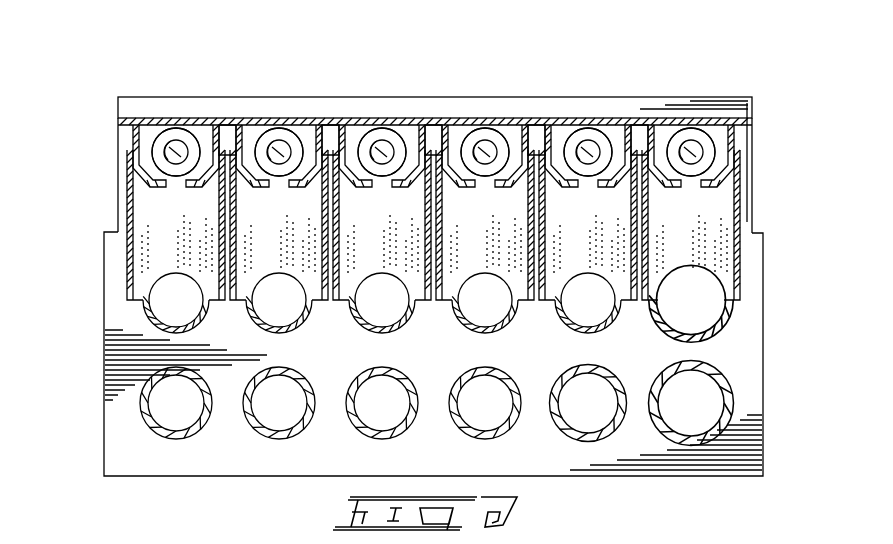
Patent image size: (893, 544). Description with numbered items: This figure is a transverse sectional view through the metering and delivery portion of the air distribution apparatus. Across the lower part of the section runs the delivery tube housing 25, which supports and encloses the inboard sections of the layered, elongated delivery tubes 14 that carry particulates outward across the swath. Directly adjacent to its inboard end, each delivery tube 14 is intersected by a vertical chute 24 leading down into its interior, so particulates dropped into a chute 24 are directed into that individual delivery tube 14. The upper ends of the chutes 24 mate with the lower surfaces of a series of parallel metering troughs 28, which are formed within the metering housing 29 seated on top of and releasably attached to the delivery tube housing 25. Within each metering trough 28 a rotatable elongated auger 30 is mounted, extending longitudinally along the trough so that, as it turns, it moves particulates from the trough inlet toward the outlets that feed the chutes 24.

The delivery tube 14 is at (257, 430).
The vertical chute 24 is at (267, 230).
The delivery tube housing 25 is at (103, 412).
The metering trough 28 is at (134, 152).
The metering housing 29 is at (628, 97).
The auger 30 is at (372, 152).